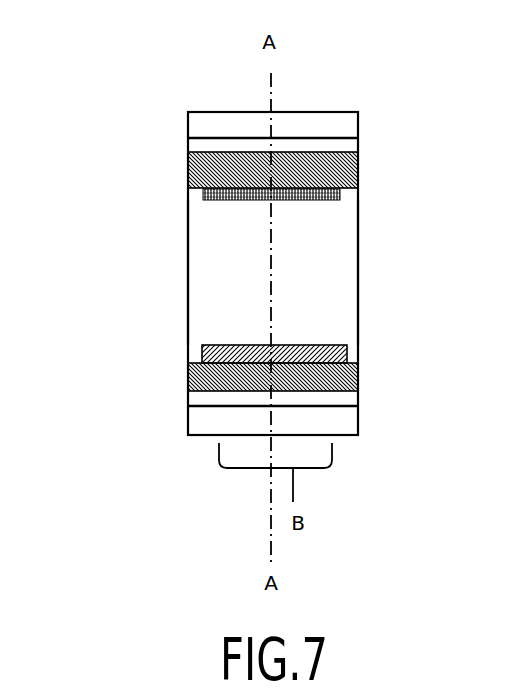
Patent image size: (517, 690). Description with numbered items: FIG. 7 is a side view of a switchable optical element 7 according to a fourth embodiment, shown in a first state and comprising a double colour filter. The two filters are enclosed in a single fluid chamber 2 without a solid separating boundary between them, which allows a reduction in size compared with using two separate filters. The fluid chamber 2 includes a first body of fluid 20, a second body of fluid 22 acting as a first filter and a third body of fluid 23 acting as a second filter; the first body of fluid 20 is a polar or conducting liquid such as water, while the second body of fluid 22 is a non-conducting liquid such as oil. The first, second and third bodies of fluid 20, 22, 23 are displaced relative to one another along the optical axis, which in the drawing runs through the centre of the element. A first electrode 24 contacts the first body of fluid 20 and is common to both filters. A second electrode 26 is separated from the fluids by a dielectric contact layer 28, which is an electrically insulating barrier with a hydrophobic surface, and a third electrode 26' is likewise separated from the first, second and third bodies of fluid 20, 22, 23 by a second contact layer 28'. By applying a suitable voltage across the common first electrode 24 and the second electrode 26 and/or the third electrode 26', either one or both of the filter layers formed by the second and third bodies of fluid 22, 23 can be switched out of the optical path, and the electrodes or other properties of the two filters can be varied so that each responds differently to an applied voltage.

The switchable optical element 7 is at (176, 73).
The fluid chamber 2 is at (188, 207).
The first body of fluid 20 is at (340, 282).
The second body of fluid 22 is at (345, 353).
The third body of fluid 23 is at (336, 201).
The first electrode 24 is at (211, 272).
The second electrode 26 is at (248, 418).
The third electrode 26' is at (237, 152).
The dielectric contact layer 28 is at (195, 393).
The second contact layer 28' is at (199, 182).